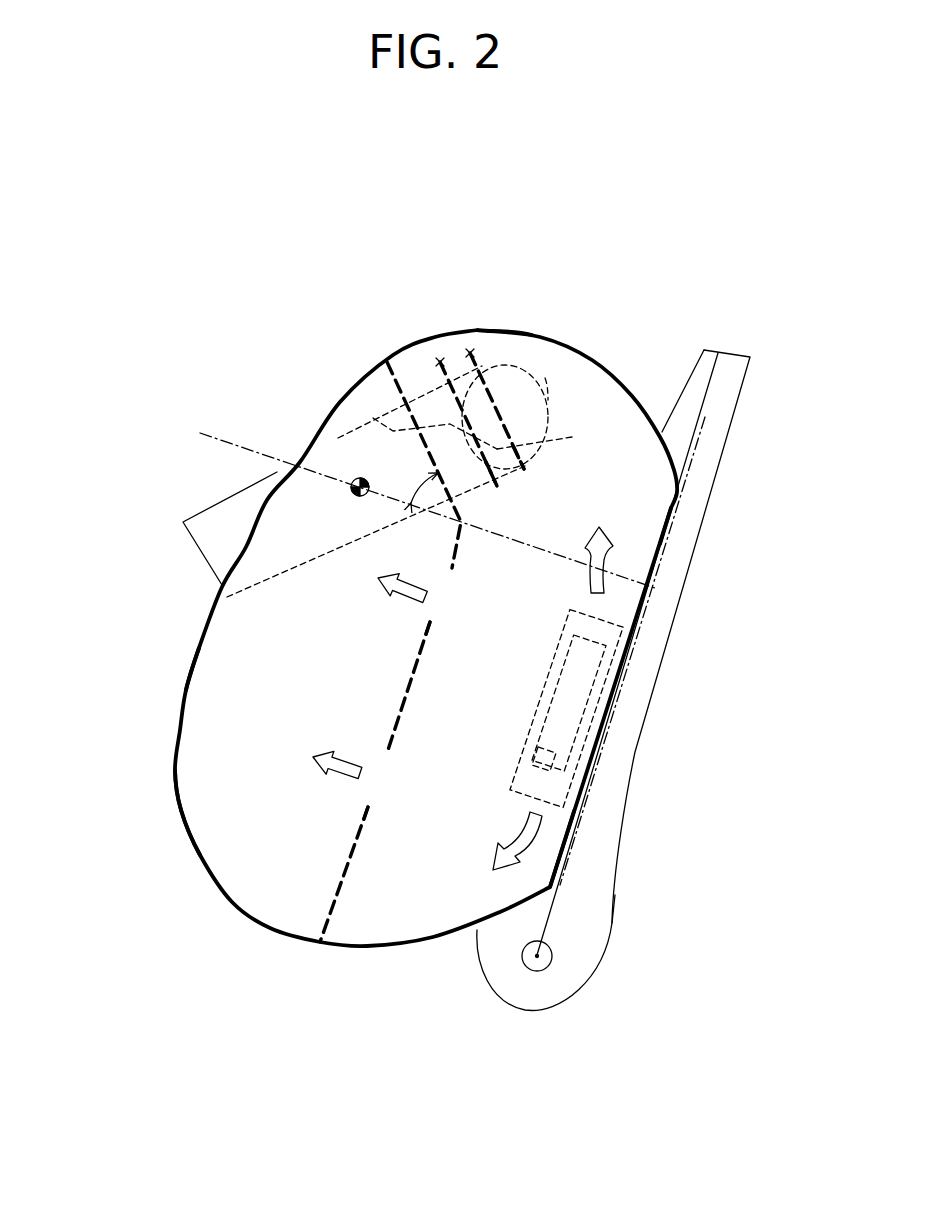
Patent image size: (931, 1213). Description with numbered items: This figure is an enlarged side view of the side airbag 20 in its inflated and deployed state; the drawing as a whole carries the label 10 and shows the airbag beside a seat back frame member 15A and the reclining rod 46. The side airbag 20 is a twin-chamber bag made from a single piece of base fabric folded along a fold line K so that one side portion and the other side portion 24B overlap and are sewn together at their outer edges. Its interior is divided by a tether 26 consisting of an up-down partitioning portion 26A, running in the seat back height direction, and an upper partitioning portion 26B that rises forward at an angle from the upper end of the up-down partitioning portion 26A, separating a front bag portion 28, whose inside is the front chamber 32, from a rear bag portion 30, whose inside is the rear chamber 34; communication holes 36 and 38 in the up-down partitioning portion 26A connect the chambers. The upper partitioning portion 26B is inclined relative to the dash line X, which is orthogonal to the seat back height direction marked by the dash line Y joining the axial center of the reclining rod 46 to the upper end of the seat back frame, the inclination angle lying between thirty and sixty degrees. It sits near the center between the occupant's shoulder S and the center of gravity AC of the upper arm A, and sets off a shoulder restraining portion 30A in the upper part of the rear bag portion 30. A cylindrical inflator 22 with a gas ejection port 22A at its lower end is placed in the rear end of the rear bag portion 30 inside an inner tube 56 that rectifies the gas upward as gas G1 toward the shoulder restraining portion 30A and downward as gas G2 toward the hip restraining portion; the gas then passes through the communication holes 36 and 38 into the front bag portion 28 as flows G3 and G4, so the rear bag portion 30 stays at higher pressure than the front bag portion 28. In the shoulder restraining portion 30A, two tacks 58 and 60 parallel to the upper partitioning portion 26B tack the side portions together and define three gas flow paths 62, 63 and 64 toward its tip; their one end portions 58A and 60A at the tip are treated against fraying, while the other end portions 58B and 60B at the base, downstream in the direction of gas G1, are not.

The vehicle side airbag device 10 is at (311, 221).
The center pillar garnish 15A is at (725, 462).
The side airbag 20 is at (188, 681).
The inflator 22 is at (607, 737).
The gas ejection port 22A is at (590, 777).
The other side portion 24B is at (222, 840).
The tether 26 is at (400, 692).
The up-down partitioning portion 26A is at (360, 858).
The upper partitioning portion 26B is at (396, 388).
The front bag portion 28 is at (208, 728).
The rear bag portion 30 is at (530, 650).
The shoulder restraining portion 30A is at (503, 350).
The front chamber 32 is at (205, 763).
The rear chamber 34 is at (523, 690).
The communication hole 36 is at (434, 621).
The communication hole 38 is at (372, 808).
The reclining rod 46 is at (553, 957).
The inner tube 56 is at (535, 738).
The tack 58 is at (471, 432).
The one end portion 58A is at (438, 361).
The other end portion 58B is at (499, 488).
The tack 60 is at (500, 411).
The one end portion 60A is at (470, 352).
The other end portion 60B is at (526, 470).
The gas flow path 62 is at (417, 407).
The gas flow path 63 is at (553, 432).
The gas flow path 64 is at (545, 378).
The center of gravity of the upper arm AC is at (357, 480).
The shoulder S is at (527, 367).
The alternate long and short dash line X is at (248, 450).
The alternate long and short dash line Y is at (700, 443).
The fold line K is at (670, 527).
The upper arm A is at (200, 549).
The gas G1 is at (615, 560).
The gas G2 is at (528, 845).
The gas flow G3 is at (386, 588).
The gas flow G4 is at (322, 772).